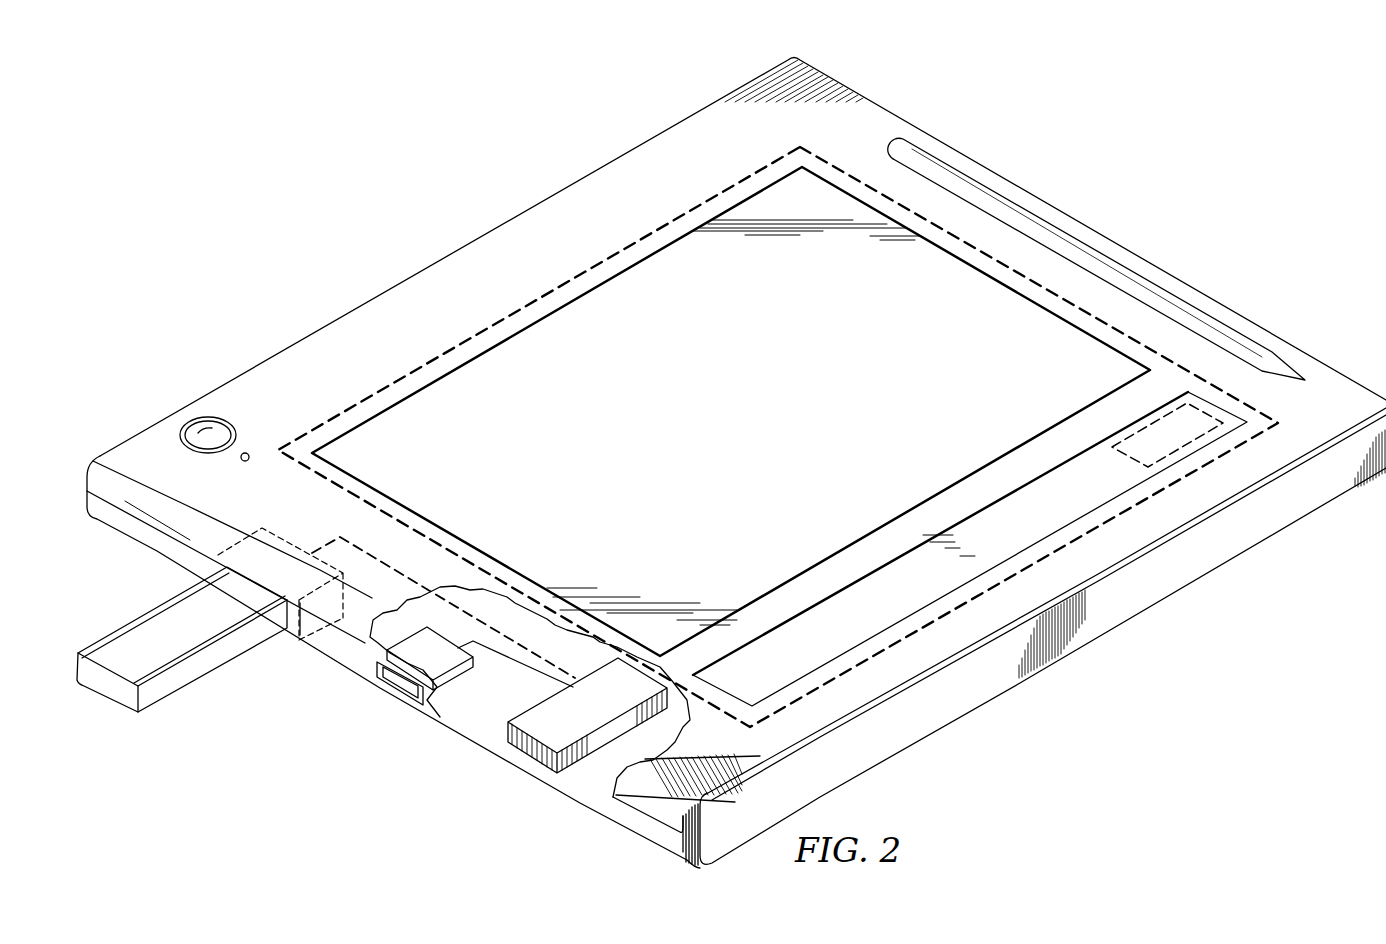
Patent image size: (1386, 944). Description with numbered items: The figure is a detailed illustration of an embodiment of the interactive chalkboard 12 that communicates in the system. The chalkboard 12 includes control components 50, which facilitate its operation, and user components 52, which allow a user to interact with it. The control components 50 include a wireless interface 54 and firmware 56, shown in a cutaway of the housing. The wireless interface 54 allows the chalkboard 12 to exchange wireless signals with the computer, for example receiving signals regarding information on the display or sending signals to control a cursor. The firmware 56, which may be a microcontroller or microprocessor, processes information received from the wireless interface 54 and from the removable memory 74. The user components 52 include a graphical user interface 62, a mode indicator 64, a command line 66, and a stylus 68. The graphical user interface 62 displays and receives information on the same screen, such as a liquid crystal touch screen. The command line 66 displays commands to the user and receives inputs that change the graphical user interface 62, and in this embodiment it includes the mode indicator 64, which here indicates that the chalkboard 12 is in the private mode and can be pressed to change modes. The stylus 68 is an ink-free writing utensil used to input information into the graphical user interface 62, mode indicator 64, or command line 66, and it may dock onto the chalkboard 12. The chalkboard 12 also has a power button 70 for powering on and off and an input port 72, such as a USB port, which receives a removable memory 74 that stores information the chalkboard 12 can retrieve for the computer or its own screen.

The interactive chalkboard 12 is at (412, 191).
The control components 50 is at (468, 746).
The user components 52 is at (513, 314).
The wireless interface 54 is at (445, 683).
The firmware 56 is at (543, 762).
The graphical user interface 62 is at (622, 290).
The mode indicator 64 is at (1130, 447).
The command line 66 is at (793, 607).
The stylus 68 is at (1088, 240).
The power button 70 is at (223, 432).
The input port 72 is at (218, 555).
The removable memory 74 is at (120, 636).